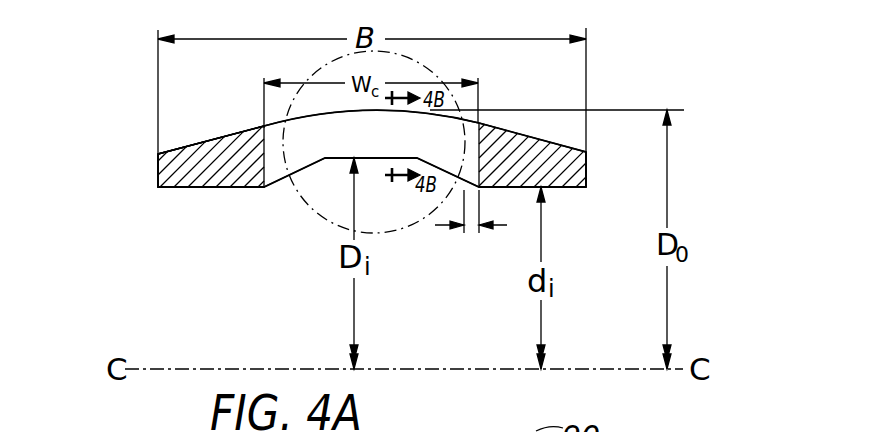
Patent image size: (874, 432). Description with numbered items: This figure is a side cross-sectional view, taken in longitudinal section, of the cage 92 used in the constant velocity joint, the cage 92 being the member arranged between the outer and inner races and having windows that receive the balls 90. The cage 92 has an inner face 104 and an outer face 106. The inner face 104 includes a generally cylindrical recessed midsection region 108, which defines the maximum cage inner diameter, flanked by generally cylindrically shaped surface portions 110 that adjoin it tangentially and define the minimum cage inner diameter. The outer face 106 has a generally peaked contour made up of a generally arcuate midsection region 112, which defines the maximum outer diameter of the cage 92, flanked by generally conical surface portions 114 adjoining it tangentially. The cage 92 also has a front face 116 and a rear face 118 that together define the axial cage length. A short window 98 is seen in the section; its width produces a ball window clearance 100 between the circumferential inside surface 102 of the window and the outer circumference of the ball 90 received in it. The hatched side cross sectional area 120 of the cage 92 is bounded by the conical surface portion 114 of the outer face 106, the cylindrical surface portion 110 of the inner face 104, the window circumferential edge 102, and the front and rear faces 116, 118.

The cage 92 is at (623, 74).
The arcuate midsection region 112 is at (343, 110).
The ball 90 is at (295, 193).
The outer face 106 is at (200, 142).
The conical surface portion 114 is at (178, 150).
The front face 116 is at (158, 170).
The cylindrically shaped surface portion 110 is at (166, 188).
The inner face 104 is at (177, 188).
The side cross sectional area 120 is at (237, 148).
The short window 98 is at (268, 183).
The recessed midsection region 108 is at (337, 168).
The circumferential inside surface 102 is at (478, 147).
The rear face 118 is at (586, 173).
The ball window clearance 100 is at (452, 226).